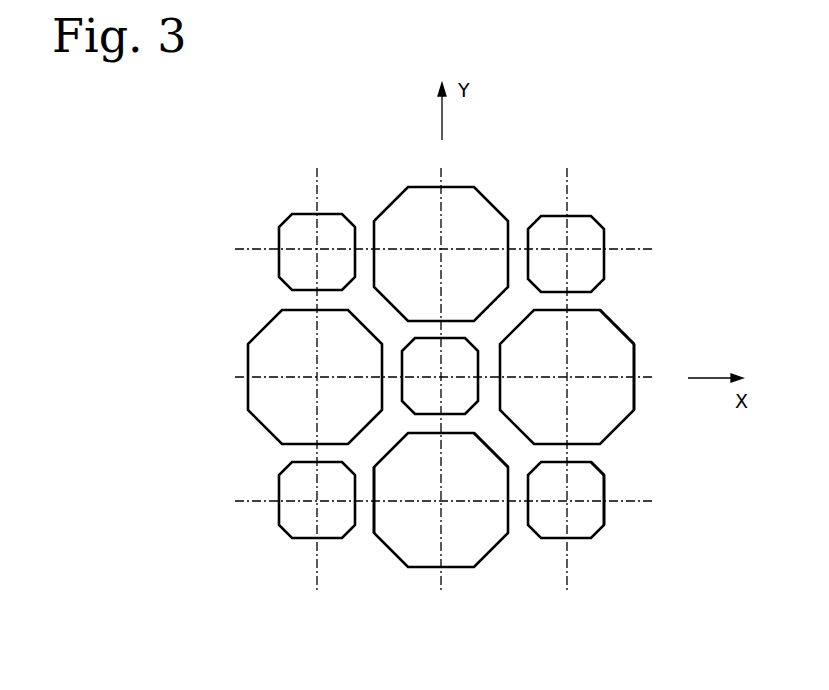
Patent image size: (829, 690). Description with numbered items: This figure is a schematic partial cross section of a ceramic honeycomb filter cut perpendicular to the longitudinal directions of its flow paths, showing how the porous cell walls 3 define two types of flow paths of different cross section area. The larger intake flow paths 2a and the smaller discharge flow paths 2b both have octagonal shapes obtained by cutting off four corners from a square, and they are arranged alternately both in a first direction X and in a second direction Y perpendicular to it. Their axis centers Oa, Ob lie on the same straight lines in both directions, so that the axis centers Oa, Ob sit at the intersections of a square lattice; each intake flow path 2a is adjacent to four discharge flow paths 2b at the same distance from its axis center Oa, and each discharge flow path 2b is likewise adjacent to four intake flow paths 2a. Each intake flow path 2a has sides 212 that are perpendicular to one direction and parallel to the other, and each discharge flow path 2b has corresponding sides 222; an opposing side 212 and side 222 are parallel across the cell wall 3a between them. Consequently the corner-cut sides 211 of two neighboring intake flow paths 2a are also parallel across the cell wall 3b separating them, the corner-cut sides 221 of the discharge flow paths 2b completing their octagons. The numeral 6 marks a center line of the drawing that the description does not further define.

The intake flow path 2a is at (404, 218).
The discharge flow path 2b is at (585, 237).
The side of intake flow path 211 is at (613, 324).
The side of intake flow path 212 is at (634, 355).
The side of discharge flow path 221 is at (598, 467).
The side of discharge flow path 222 is at (604, 490).
The cell wall 3 is at (435, 551).
The cell wall 3a is at (363, 518).
The cell wall 3b is at (508, 438).
The center line 6 is at (566, 570).
The axis center of intake flow path Oa is at (313, 378).
The axis center of discharge flow path Ob is at (317, 250).